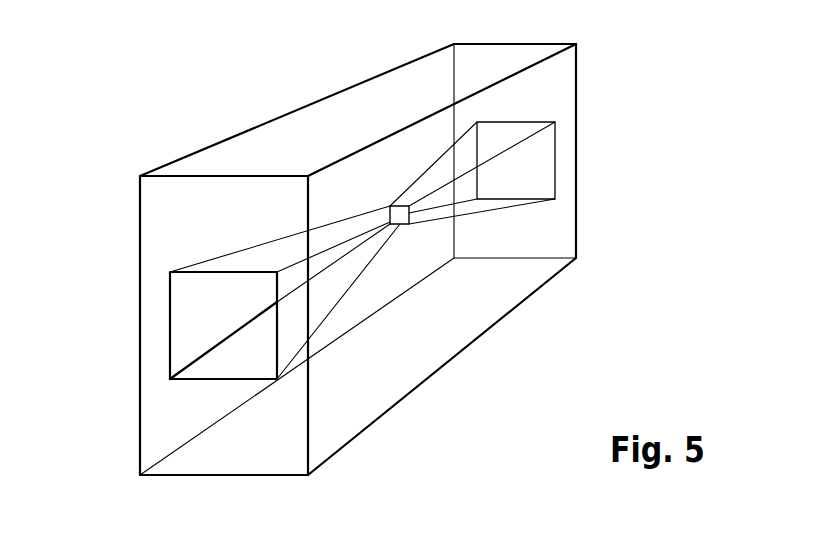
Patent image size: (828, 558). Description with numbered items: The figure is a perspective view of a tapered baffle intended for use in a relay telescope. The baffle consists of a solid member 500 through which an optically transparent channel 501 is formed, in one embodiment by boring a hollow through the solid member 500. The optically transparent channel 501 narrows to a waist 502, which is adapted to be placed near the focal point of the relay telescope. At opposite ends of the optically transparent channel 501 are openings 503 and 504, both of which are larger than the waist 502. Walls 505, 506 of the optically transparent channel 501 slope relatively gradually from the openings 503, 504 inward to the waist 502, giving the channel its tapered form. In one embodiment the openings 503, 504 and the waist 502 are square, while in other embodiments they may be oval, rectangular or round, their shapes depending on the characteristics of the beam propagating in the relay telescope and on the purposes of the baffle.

The solid member 500 is at (562, 228).
The optically transparent channel 501 is at (222, 313).
The waist 502 is at (402, 206).
The opening 503 is at (202, 272).
The opening 504 is at (527, 128).
The wall 505 is at (338, 277).
The wall 506 is at (495, 175).